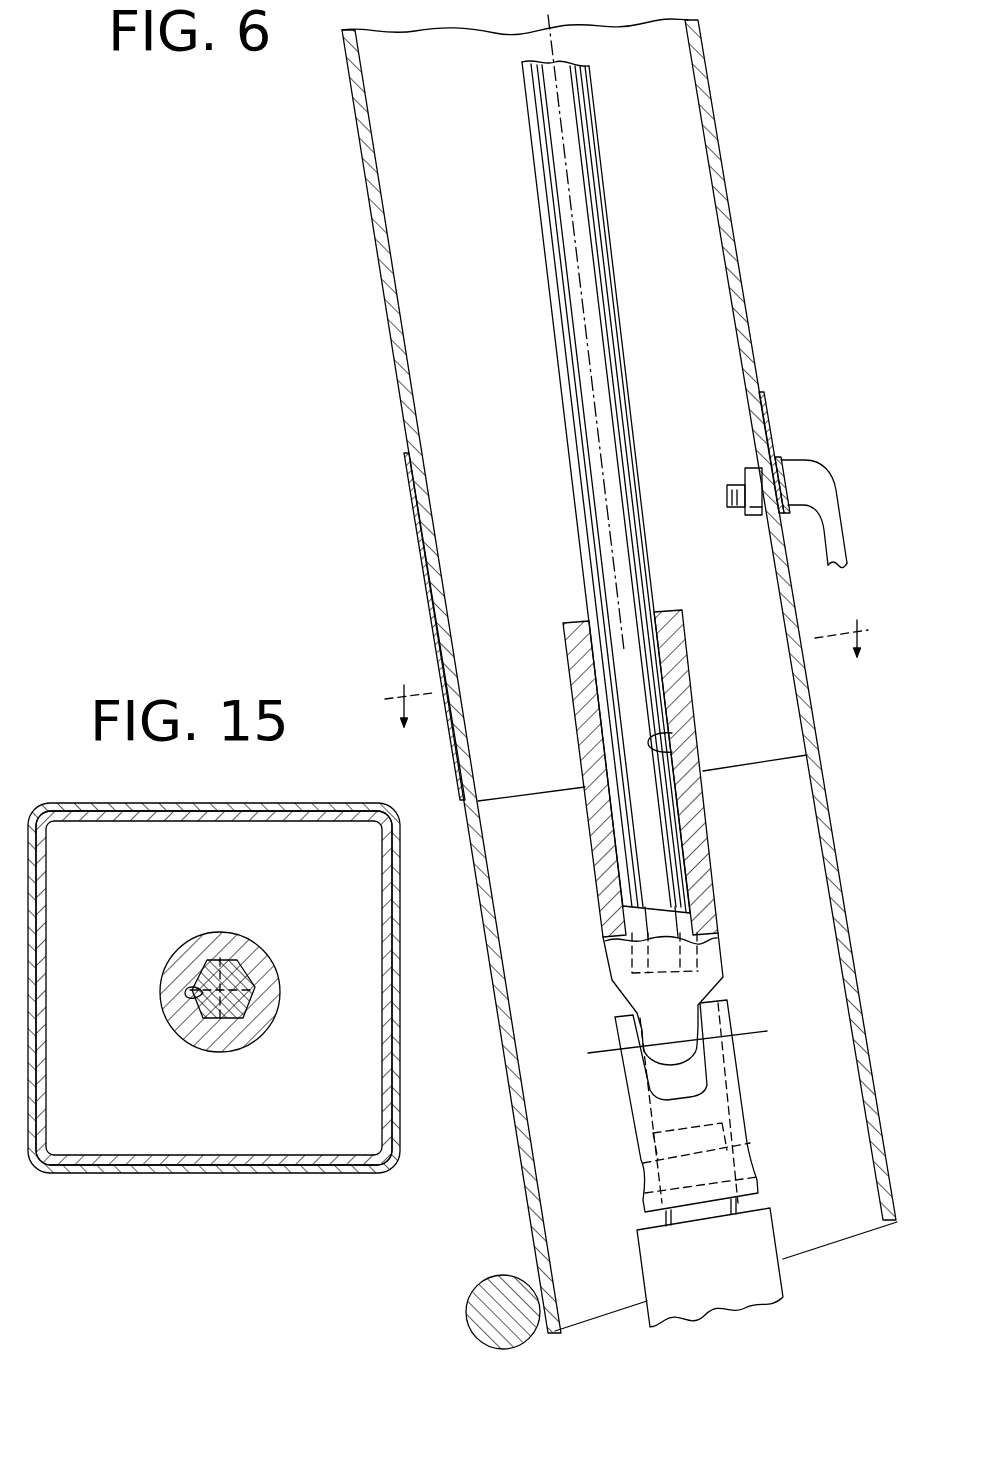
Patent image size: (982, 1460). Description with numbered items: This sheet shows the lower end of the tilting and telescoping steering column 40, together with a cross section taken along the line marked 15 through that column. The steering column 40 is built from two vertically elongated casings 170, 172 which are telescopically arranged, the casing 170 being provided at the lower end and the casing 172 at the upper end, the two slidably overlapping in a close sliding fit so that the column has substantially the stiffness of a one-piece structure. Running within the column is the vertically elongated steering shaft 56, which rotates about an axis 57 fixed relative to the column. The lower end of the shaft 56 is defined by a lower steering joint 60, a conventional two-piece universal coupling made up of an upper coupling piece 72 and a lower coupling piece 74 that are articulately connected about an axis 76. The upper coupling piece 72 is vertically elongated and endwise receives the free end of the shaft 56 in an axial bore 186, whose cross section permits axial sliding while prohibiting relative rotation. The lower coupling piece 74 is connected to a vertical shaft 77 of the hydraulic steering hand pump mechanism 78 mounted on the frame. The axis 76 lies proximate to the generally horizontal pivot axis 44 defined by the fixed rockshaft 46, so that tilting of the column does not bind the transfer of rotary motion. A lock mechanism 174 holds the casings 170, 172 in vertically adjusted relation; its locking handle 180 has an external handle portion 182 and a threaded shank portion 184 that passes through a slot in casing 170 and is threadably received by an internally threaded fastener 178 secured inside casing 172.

In FIG. 6, the steering column 40 is at (383, 362).
In FIG. 6, the casing 172 is at (372, 150).
In FIG. 15, the casing 172 is at (53, 905).
In FIG. 6, the casing 170 is at (505, 983).
In FIG. 15, the casing 170 is at (30, 850).
In FIG. 6, the steering shaft 56 is at (628, 348).
In FIG. 15, the steering shaft 56 is at (283, 950).
In FIG. 6, the axis 57 is at (565, 174).
In FIG. 15, the axis 57 is at (237, 966).
In FIG. 6, the upper coupling piece 72 is at (583, 701).
In FIG. 15, the upper coupling piece 72 is at (277, 993).
In FIG. 6, the axial bore 186 is at (665, 735).
In FIG. 15, the axial bore 186 is at (203, 993).
In FIG. 6, the lower steering joint 60 is at (745, 946).
In FIG. 15, the lower steering joint 60 is at (224, 950).
In FIG. 6, the lower coupling piece 74 is at (632, 1104).
In FIG. 6, the axis 76 is at (764, 1031).
In FIG. 6, the vertical shaft 77 is at (733, 1208).
In FIG. 6, the hydraulic steering hand pump mechanism 78 is at (790, 1288).
In FIG. 6, the pivot axis 44 is at (503, 1312).
In FIG. 6, the rockshaft 46 is at (470, 1312).
In FIG. 6, the lock mechanism 174 is at (822, 452).
In FIG. 6, the locking handle 180 is at (843, 522).
In FIG. 6, the external handle portion 182 is at (848, 542).
In FIG. 6, the threaded shank portion 184 is at (727, 488).
In FIG. 6, the internally threaded fastener 178 is at (755, 517).
In FIG. 6, the section line 15- 15 is at (628, 657).